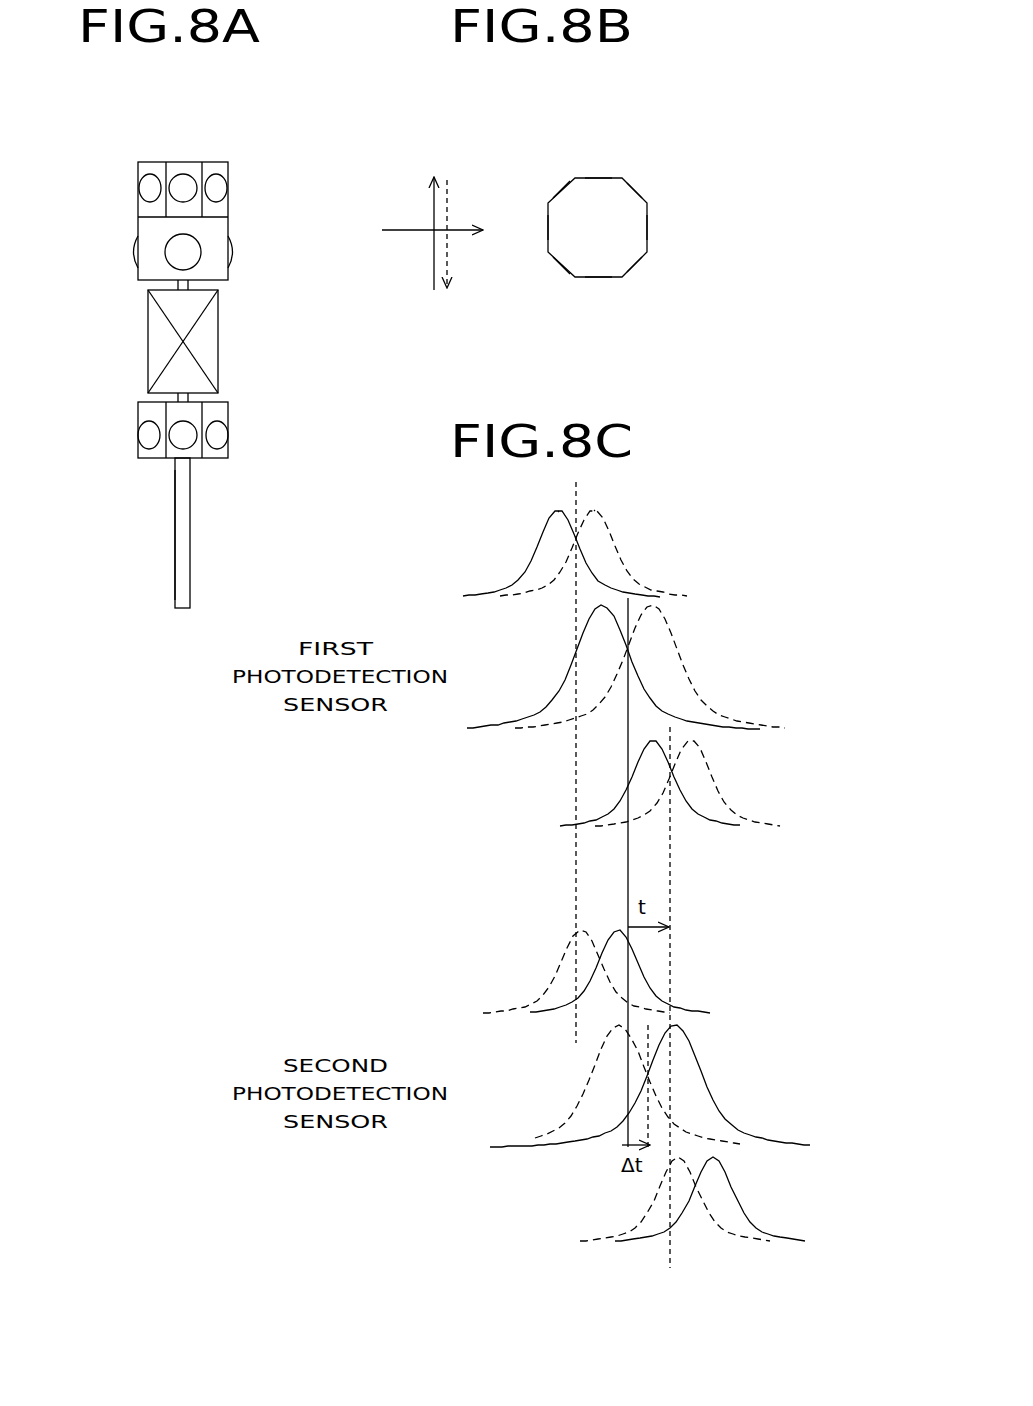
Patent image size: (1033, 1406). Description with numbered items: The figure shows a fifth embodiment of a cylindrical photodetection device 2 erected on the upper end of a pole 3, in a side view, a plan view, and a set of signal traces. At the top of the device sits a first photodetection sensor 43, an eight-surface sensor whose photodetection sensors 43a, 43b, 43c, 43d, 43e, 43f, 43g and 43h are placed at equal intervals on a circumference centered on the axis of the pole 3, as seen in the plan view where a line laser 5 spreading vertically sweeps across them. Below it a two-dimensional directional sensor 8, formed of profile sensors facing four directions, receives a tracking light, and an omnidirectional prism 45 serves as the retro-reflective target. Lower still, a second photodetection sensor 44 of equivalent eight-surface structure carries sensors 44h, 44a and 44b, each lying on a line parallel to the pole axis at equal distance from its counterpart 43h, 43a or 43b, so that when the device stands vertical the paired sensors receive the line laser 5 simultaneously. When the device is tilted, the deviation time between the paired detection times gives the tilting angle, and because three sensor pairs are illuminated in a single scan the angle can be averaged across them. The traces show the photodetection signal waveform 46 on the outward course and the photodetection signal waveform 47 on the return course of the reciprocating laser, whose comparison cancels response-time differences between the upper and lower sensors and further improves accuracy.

In FIG. 8A, the photodetection device 2 is at (103, 237).
In FIG. 8A, the pole 3 is at (191, 529).
In FIG. 8B, the line laser 5 is at (395, 232).
In FIG. 8A, the directional sensor 8 is at (137, 279).
In FIG. 8A, the first photodetection sensor 43 is at (134, 205).
In FIG. 8A, the photodetection sensor 43a is at (185, 176).
In FIG. 8B, the photodetection sensor 43a is at (547, 233).
In FIG. 8C, the photodetection sensor 43a is at (598, 671).
In FIG. 8A, the photodetection sensor 43b is at (217, 178).
In FIG. 8B, the photodetection sensor 43b is at (561, 193).
In FIG. 8C, the photodetection sensor 43b is at (596, 788).
In FIG. 8B, the photodetection sensor 43c is at (597, 177).
In FIG. 8B, the photodetection sensor 43d is at (635, 195).
In FIG. 8B, the photodetection sensor 43e is at (648, 233).
In FIG. 8B, the photodetection sensor 43f is at (636, 262).
In FIG. 8B, the photodetection sensor 43g is at (597, 278).
In FIG. 8A, the photodetection sensor 43h is at (152, 176).
In FIG. 8B, the photodetection sensor 43h is at (560, 263).
In FIG. 8C, the photodetection sensor 43h is at (549, 558).
In FIG. 8A, the second photodetection sensor 44 is at (134, 416).
In FIG. 8A, the photodetection sensor 44a is at (171, 462).
In FIG. 8C, the photodetection sensor 44a is at (611, 1092).
In FIG. 8A, the photodetection sensor 44b is at (216, 458).
In FIG. 8C, the photodetection sensor 44b is at (608, 1207).
In FIG. 8A, the photodetection sensor 44h is at (148, 454).
In FIG. 8C, the photodetection sensor 44h is at (561, 978).
In FIG. 8A, the omnidirectional prism 45 is at (147, 349).
In FIG. 8C, the photodetection signal waveform 46 is at (540, 525).
In FIG. 8C, the photodetection signal waveform 47 is at (612, 540).